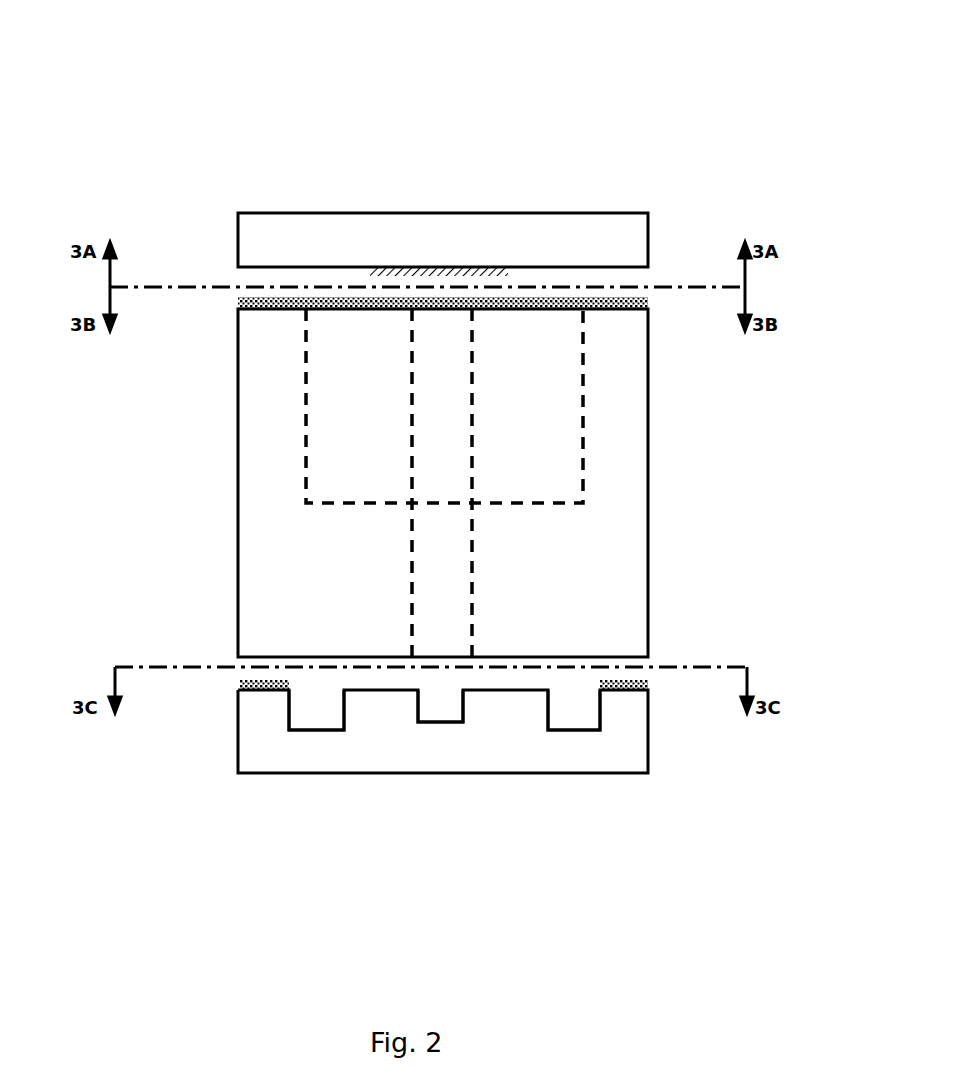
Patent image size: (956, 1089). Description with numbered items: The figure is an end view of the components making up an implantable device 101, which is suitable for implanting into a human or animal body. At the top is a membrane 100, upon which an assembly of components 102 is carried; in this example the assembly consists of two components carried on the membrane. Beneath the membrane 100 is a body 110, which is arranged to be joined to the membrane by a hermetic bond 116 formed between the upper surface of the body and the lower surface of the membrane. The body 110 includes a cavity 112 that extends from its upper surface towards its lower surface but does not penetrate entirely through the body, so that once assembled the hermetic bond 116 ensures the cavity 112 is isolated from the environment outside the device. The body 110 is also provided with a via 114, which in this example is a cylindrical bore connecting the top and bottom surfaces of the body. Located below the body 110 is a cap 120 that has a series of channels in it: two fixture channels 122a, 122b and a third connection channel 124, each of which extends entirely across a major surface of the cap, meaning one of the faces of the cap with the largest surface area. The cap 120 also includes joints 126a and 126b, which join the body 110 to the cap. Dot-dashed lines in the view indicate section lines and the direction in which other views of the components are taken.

The implantable device 101 is at (230, 80).
The membrane 100 is at (412, 238).
The assembly of components 102 is at (453, 276).
The hermetic bond 116 is at (290, 300).
The body 110 is at (600, 567).
The cavity 112 is at (555, 452).
The via 114 is at (430, 568).
The cap 120 is at (385, 736).
The fixture channel 122a is at (320, 708).
The fixture channel 122b is at (572, 708).
The connection channel 124 is at (439, 699).
The joint 126a is at (241, 693).
The joint 126b is at (646, 693).